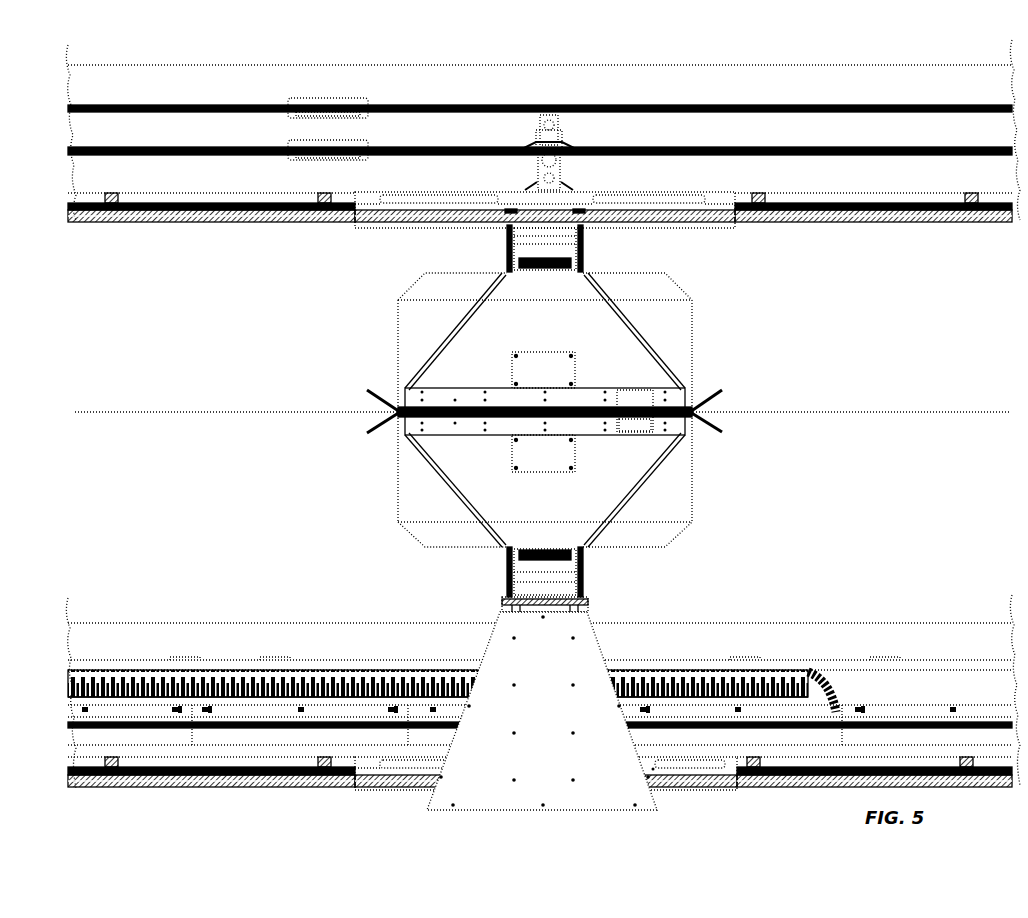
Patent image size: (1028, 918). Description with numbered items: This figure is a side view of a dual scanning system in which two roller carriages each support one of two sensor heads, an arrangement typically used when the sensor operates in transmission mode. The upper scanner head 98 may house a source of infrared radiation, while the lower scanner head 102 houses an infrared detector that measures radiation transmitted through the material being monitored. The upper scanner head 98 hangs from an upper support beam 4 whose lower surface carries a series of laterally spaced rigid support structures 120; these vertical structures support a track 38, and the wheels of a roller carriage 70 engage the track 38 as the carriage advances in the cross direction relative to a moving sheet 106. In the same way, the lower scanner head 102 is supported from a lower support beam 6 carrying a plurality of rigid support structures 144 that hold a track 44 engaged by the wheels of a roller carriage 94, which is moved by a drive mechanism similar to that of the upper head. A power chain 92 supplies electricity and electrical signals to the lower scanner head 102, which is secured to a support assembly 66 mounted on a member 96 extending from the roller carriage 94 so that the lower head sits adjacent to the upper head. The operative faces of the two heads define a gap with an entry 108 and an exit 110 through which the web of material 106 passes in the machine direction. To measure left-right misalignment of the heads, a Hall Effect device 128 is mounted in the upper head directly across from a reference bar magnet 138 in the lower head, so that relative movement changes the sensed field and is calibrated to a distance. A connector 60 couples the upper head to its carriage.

The upper support beam 4 is at (258, 65).
The lower support beam 6 is at (258, 623).
The track 38 is at (222, 222).
The track 44 is at (222, 787).
The upper connector 60 is at (584, 258).
The support assembly 66 is at (506, 565).
The roller carriage 70 is at (365, 208).
The power chain 92 is at (768, 668).
The roller carriage 94 is at (365, 772).
The member 96 is at (590, 685).
The upper scanner head 98 is at (694, 318).
The lower scanner head 102 is at (694, 488).
The moving sheet 106 is at (860, 410).
The entry 108 is at (745, 391).
The exit 110 is at (350, 433).
The rigid support structures 120 is at (963, 203).
The Hall Effect device 128 is at (640, 388).
The reference bar magnet 138 is at (640, 433).
The rigid support structures 144 is at (745, 790).